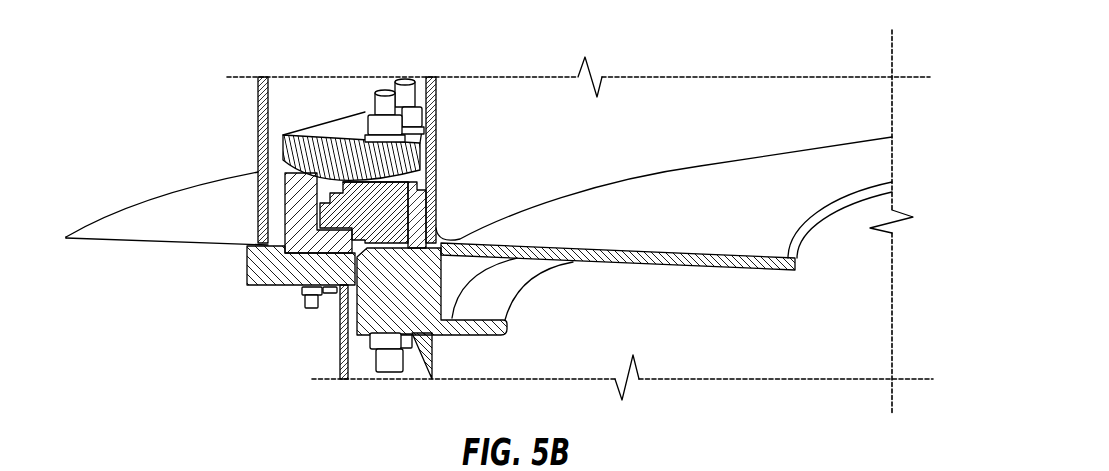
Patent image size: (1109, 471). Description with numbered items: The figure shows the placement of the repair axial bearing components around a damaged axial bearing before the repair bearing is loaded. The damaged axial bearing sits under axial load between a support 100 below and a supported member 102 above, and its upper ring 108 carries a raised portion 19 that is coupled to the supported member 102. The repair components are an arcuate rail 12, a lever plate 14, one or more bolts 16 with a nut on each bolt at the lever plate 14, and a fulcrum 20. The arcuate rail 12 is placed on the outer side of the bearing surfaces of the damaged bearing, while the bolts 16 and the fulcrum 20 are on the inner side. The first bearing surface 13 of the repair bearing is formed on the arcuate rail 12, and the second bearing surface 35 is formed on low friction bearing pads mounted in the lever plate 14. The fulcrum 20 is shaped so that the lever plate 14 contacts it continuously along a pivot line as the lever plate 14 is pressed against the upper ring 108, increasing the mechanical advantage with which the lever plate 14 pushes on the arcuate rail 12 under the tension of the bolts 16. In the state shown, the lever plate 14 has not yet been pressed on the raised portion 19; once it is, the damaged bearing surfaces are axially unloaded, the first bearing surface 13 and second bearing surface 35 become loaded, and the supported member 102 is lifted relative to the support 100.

The arcuate rail 12 is at (283, 161).
The first bearing surface 13 is at (336, 177).
The lever plate 14 is at (418, 173).
The bolts 16 is at (366, 114).
The raised portion 19 is at (283, 157).
The fulcrum 20 is at (426, 213).
The second bearing surface 35 is at (284, 182).
The support 100 is at (138, 206).
The supported member 102 is at (668, 232).
The upper ring 108 is at (381, 184).